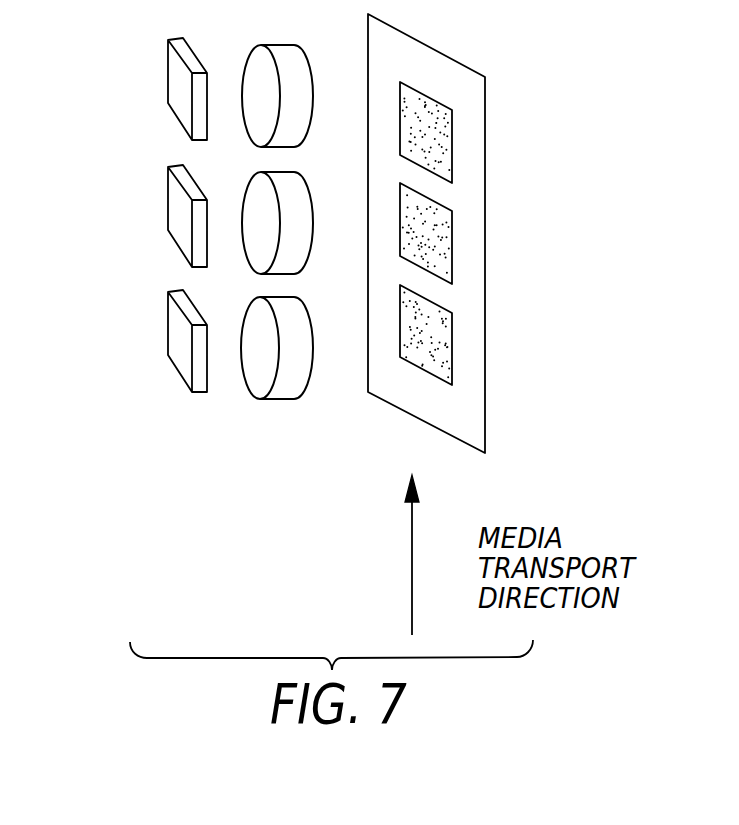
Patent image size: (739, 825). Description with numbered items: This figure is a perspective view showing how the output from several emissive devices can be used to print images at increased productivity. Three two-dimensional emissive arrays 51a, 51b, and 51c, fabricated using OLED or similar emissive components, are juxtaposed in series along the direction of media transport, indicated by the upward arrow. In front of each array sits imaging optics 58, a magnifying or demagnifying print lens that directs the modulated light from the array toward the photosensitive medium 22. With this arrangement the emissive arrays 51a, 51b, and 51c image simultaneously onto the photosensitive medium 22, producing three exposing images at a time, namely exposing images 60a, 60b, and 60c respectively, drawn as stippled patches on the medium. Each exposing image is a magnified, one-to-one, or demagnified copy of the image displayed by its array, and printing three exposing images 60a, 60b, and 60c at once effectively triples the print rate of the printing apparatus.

The two-dimensional emissive array 51a is at (175, 87).
The two-dimensional emissive array 51b is at (173, 225).
The two-dimensional emissive array 51c is at (173, 342).
The imaging optics 58 is at (273, 400).
The exposing image 60a is at (450, 142).
The exposing image 60b is at (445, 250).
The exposing image 60c is at (443, 348).
The photosensitive medium 22 is at (485, 405).